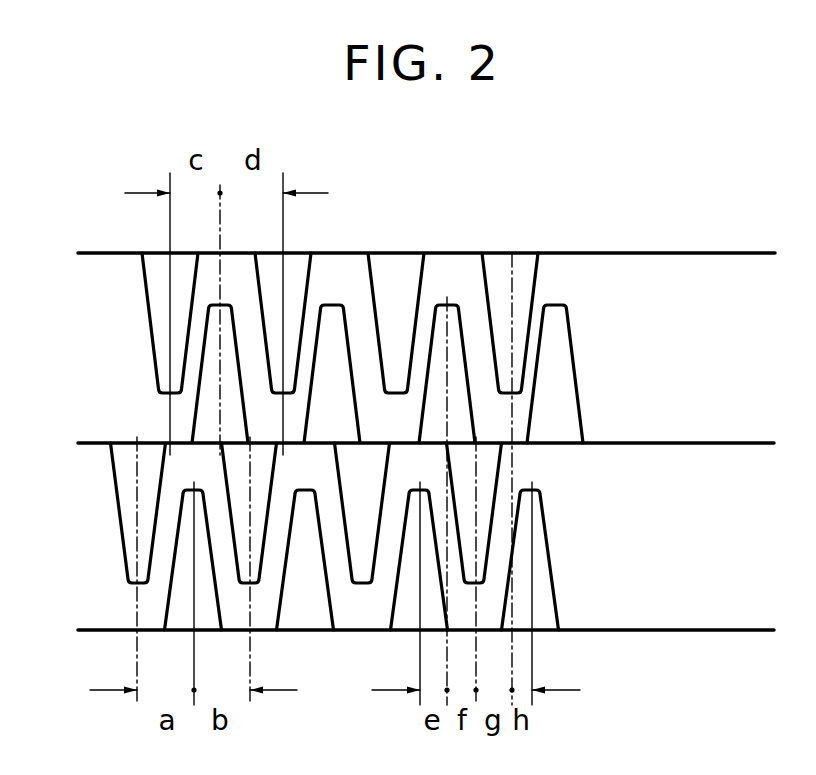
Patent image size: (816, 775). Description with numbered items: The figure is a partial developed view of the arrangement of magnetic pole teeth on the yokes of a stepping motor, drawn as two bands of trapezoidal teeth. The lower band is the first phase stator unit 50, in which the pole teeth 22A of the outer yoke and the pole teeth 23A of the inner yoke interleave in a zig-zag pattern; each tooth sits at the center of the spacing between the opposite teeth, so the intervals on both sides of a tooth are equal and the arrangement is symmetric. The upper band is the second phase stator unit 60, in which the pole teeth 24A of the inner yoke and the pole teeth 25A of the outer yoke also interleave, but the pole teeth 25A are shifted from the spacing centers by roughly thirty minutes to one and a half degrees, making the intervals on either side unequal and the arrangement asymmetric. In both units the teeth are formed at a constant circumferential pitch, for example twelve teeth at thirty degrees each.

The second phase stator unit 60 is at (62, 367).
The first phase stator unit 50 is at (62, 553).
The pole teeth of second phase outer yoke 25A is at (517, 343).
The pole teeth of second phase inner yoke 24A is at (565, 358).
The pole teeth of first phase inner yoke 23A is at (485, 542).
The pole teeth of first phase outer yoke 22A is at (542, 563).